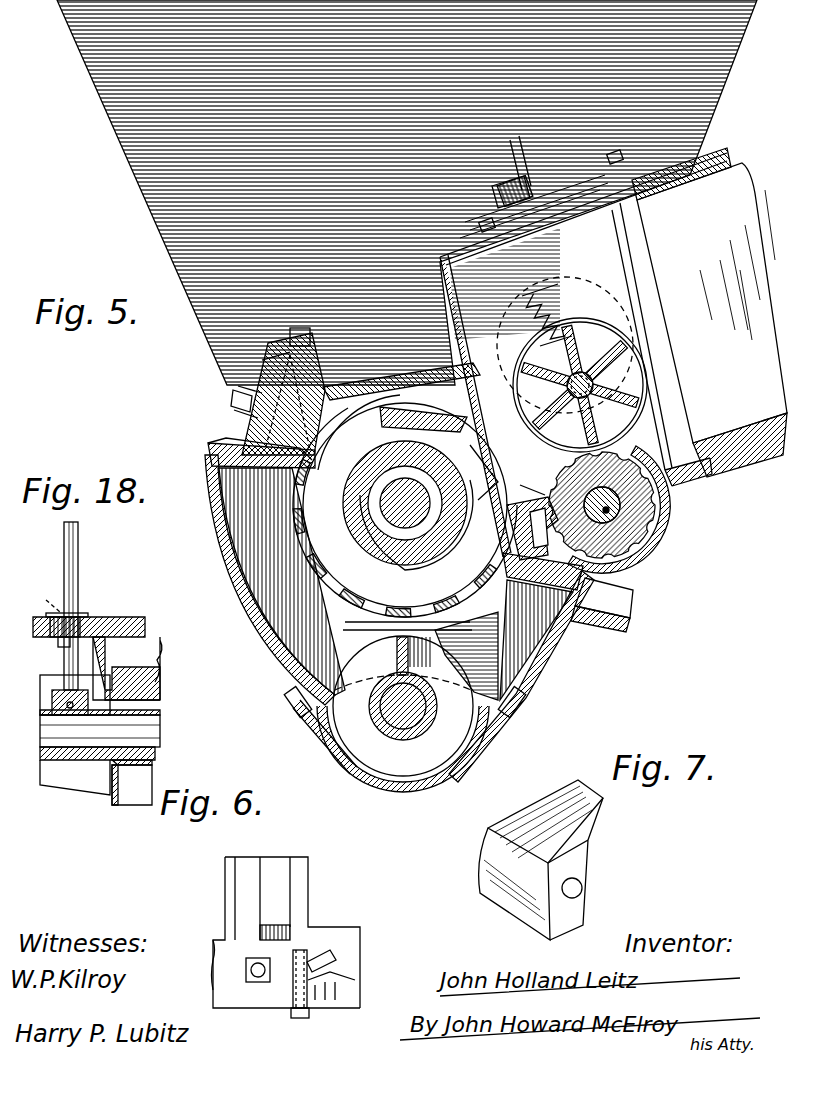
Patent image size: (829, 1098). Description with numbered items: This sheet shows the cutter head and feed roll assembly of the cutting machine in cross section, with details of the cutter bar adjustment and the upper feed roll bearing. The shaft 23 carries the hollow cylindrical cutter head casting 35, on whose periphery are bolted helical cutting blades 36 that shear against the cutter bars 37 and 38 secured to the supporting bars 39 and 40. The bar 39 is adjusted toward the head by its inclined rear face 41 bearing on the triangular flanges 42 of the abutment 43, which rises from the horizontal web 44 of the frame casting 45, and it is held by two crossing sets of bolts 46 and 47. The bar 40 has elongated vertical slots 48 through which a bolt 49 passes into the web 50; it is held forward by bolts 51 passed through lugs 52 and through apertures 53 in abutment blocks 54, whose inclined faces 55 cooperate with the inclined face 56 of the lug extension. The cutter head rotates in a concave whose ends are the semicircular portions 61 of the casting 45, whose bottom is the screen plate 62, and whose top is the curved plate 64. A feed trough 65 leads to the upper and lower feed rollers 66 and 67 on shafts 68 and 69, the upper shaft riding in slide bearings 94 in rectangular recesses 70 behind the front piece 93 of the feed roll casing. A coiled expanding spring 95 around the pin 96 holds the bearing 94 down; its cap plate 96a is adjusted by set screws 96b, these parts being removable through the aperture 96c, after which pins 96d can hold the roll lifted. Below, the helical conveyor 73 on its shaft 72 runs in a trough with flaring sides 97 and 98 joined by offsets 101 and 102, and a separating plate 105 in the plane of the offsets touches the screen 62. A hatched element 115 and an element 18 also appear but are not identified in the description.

In FIG. 5, the hatched support plate 115 is at (148, 177).
In FIG. 5, the front piece of feed roll casing 93 is at (452, 290).
In FIG. 5, the feed trough 65 is at (699, 317).
In FIG. 5, the helically coiled expanding spring 95 is at (560, 290).
In FIG. 5, the upper feed roller 66 is at (576, 320).
In FIG. 18, the upper feed roller 66 is at (150, 676).
In FIG. 5, the upper feed roller shaft 68 is at (589, 360).
In FIG. 18, the upper feed roller shaft 68 is at (152, 722).
In FIG. 5, the lower feed roller shaft 69 is at (655, 520).
In FIG. 5, the shaft 23 is at (405, 515).
In FIG. 5, the cutter head casting 35 is at (350, 490).
In FIG. 5, the helical cutting blades 36 is at (402, 410).
In FIG. 5, the cutter bar 37 is at (392, 482).
In FIG. 5, the curved plate 64 is at (425, 386).
In FIG. 5, the semi-circular portions of the casting 61 is at (484, 486).
In FIG. 5, the lower feed roller 67 is at (545, 480).
In FIG. 5, the supporting bar 40 is at (525, 500).
In FIG. 6, the supporting bar 40 is at (248, 870).
In FIG. 5, the cutter bar 38 is at (512, 545).
In FIG. 6, the cutter bar 38 is at (226, 885).
In FIG. 5, the horizontal web 50 is at (536, 640).
In FIG. 5, the offset 102 is at (529, 625).
In FIG. 5, the screen plate 62 is at (466, 656).
In FIG. 5, the flaring side portion 98 is at (545, 660).
In FIG. 5, the separating plate 105 is at (395, 635).
In FIG. 5, the supporting bar 39 is at (305, 362).
In FIG. 5, the bolts 47 is at (305, 332).
In FIG. 5, the triangular flanges 42 is at (262, 358).
In FIG. 5, the inclined rear face 41 is at (236, 390).
In FIG. 5, the bolts 46 is at (236, 394).
In FIG. 5, the flange or abutment 43 is at (236, 414).
In FIG. 5, the horizontal web 44 is at (215, 445).
In FIG. 5, the frame casting 45 is at (208, 448).
In FIG. 5, the flaring side portion 97 is at (228, 590).
In FIG. 5, the offset 101 is at (281, 581).
In FIG. 5, the conveyor shaft 72 is at (425, 722).
In FIG. 5, the helical conveyor 73 is at (392, 772).
In FIG. 5, the belt strand 18 is at (438, 775).
In FIG. 5, the pin 96 is at (528, 165).
In FIG. 18, the pin 96 is at (78, 565).
In FIG. 5, the cap plate 96a is at (500, 205).
In FIG. 18, the cap plate 96a is at (45, 596).
In FIG. 5, the set screws 96b is at (608, 158).
In FIG. 18, the aperture 96c is at (92, 620).
In FIG. 18, the pins 96d is at (84, 612).
In FIG. 18, the slide bearing 94 is at (44, 716).
In FIG. 18, the rectangular recesses 70 is at (92, 782).
In FIG. 6, the abutment block 54 is at (306, 955).
In FIG. 7, the abutment block 54 is at (540, 815).
In FIG. 6, the inclined face 56 is at (318, 965).
In FIG. 6, the inclined faces 55 is at (330, 978).
In FIG. 7, the inclined faces 55 is at (598, 850).
In FIG. 7, the apertures 53 is at (582, 886).
In FIG. 6, the bolt 49 is at (246, 968).
In FIG. 6, the bolts 51 is at (312, 1008).
In FIG. 6, the lugs 52 is at (275, 1006).
In FIG. 6, the vertical slots 48 is at (258, 995).